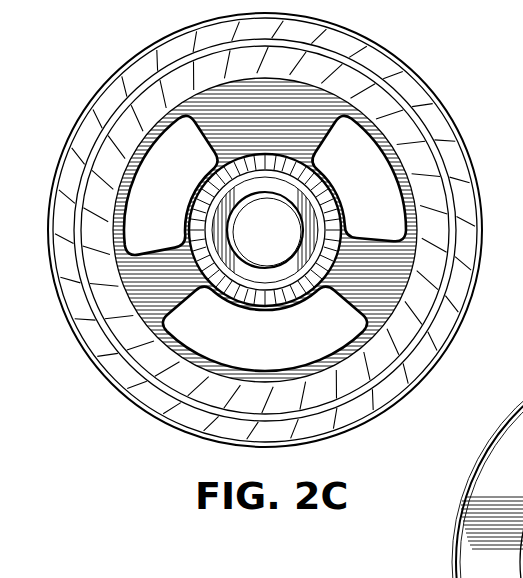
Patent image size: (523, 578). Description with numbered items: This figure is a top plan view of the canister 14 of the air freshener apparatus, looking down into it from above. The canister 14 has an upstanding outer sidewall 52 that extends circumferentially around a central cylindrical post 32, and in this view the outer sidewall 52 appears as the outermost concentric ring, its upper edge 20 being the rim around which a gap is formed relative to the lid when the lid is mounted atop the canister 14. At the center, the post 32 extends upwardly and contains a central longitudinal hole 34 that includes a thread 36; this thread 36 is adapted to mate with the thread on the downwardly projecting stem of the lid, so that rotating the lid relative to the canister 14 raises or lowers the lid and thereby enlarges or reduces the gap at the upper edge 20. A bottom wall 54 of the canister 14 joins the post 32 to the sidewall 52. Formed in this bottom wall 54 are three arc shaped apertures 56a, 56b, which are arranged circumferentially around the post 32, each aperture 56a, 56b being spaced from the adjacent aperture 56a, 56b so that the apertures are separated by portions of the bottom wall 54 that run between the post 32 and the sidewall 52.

The canister 14 is at (282, 228).
The upper edge 20 is at (420, 97).
The outer sidewall 52 is at (482, 233).
The bottom wall 54 is at (280, 135).
The aperture 56a is at (193, 330).
The aperture 56b is at (177, 143).
The central longitudinal hole 34 is at (273, 210).
The central cylindrical post 32 is at (318, 227).
The thread 36 is at (288, 250).